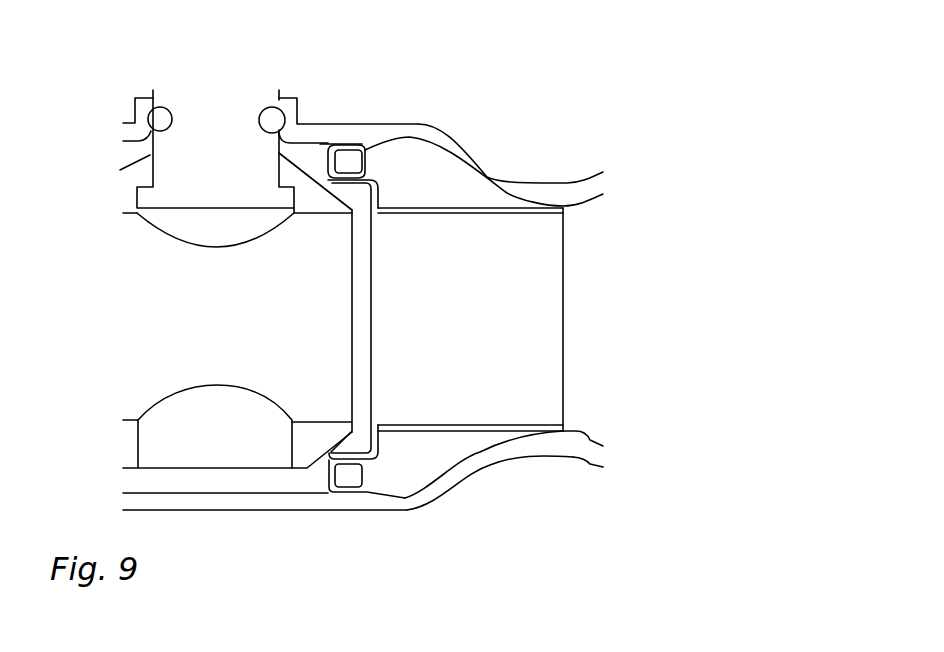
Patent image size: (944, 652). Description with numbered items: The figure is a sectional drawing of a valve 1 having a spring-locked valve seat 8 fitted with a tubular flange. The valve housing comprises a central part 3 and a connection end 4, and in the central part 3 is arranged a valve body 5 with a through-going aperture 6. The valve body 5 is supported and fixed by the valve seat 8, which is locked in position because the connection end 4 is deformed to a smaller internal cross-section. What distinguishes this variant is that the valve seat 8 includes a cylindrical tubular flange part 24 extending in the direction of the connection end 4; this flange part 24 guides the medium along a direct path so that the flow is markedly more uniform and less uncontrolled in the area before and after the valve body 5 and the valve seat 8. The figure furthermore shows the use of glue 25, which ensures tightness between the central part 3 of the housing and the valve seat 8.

The valve 1 is at (327, 80).
The central part 3 is at (232, 502).
The connection end 4 is at (537, 452).
The valve body 5 is at (306, 203).
The through-going aperture 6 is at (223, 325).
The valve seat 8 is at (380, 342).
The cylindrical tubular flange part 24 is at (424, 427).
The glue 25 is at (347, 145).